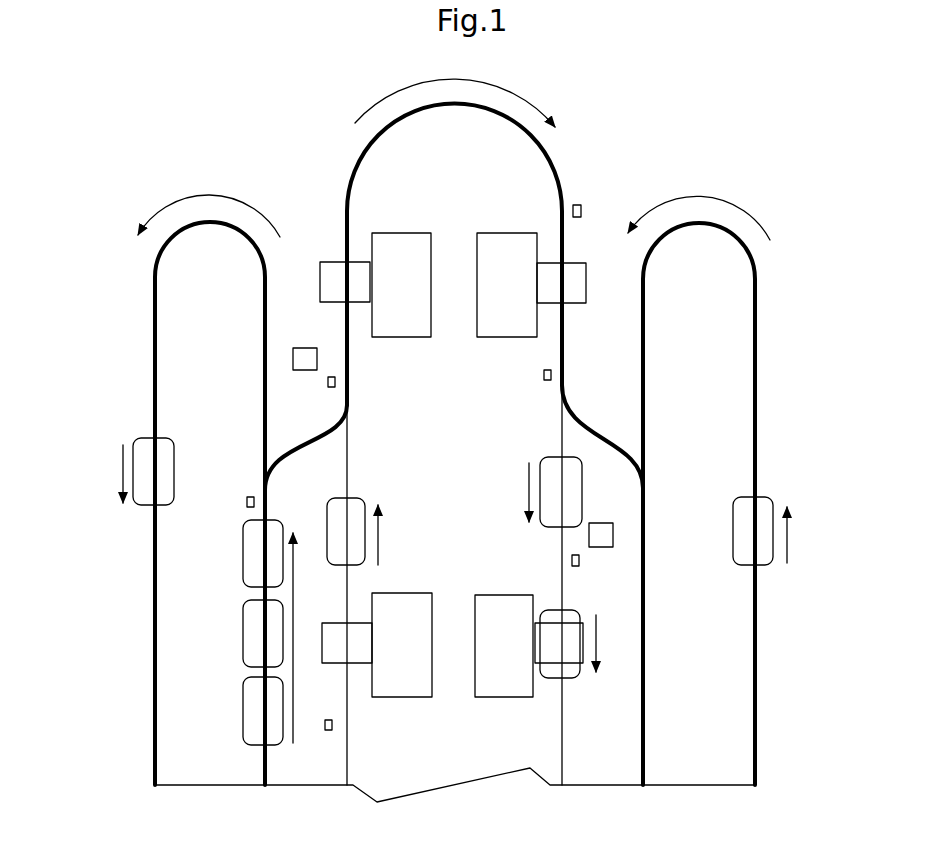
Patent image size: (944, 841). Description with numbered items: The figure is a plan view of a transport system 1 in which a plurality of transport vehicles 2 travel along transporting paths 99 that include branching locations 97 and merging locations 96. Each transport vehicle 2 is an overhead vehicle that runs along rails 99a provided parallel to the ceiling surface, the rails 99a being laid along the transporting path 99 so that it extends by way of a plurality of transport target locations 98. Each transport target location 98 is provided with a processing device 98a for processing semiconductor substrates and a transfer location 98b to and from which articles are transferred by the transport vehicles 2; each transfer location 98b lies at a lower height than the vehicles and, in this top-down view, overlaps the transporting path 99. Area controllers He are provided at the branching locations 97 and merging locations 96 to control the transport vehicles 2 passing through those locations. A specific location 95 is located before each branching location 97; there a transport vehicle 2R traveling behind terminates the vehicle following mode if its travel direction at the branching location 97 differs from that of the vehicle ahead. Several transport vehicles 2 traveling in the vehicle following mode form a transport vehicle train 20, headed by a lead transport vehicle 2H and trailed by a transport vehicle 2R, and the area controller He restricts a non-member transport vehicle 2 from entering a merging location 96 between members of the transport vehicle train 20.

The transport system 1 is at (692, 101).
The transport vehicle 2 is at (143, 438).
The lead transport vehicle 2H is at (244, 560).
The transport vehicle traveling behind 2R is at (244, 722).
The transport vehicle train 20 is at (188, 652).
The specific location 95 is at (583, 210).
The merging location 96 is at (362, 413).
The branching location 97 is at (255, 458).
The transport target location 98 is at (450, 458).
The processing device 98a is at (517, 337).
The transfer location 98b is at (338, 268).
The transporting path 99 is at (454, 432).
The rail 99a is at (356, 167).
The area controller He is at (303, 348).